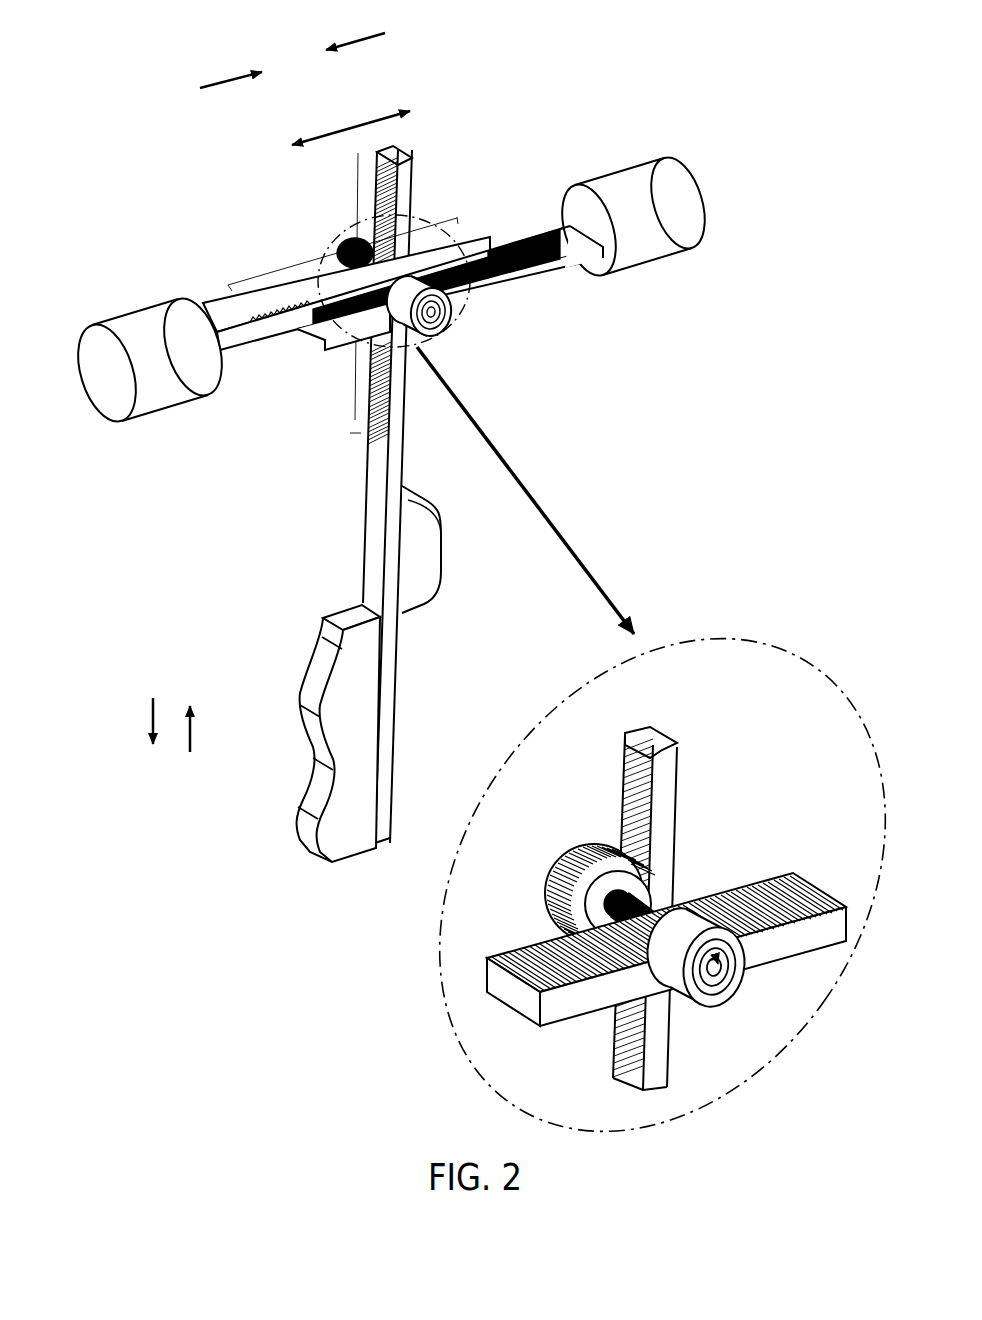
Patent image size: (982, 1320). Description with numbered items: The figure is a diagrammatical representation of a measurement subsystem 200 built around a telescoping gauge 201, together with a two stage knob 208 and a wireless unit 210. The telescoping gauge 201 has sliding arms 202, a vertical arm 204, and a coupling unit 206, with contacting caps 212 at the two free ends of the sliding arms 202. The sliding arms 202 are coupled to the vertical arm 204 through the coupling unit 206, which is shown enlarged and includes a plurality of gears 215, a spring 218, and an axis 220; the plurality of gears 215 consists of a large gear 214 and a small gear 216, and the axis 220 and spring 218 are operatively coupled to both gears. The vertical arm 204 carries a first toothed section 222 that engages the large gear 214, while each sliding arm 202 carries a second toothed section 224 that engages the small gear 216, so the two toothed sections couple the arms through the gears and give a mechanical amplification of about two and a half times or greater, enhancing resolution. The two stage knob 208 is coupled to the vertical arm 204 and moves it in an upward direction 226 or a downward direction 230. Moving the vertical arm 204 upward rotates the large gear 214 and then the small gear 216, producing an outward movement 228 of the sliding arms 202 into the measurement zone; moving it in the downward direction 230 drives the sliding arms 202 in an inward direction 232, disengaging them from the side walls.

The measurement subsystem 200 is at (766, 44).
The telescoping gauge 201 is at (352, 496).
The sliding arms 202 is at (240, 333).
The vertical arm 204 is at (416, 178).
The coupling unit 206 is at (332, 244).
The two stage knob 208 is at (422, 578).
The wireless unit 210 is at (297, 688).
The contacting caps 212 is at (143, 310).
The large gear 214 is at (355, 253).
The plurality of gears 215 is at (488, 908).
The small gear 216 is at (605, 906).
The spring 218 is at (419, 306).
The axis 220 is at (724, 980).
The first toothed section 222 is at (358, 170).
The second toothed section 224 is at (247, 284).
The upward direction 226 is at (192, 732).
The outward movement 228 is at (352, 120).
The downward direction 230 is at (151, 732).
The inward direction 232 is at (292, 60).